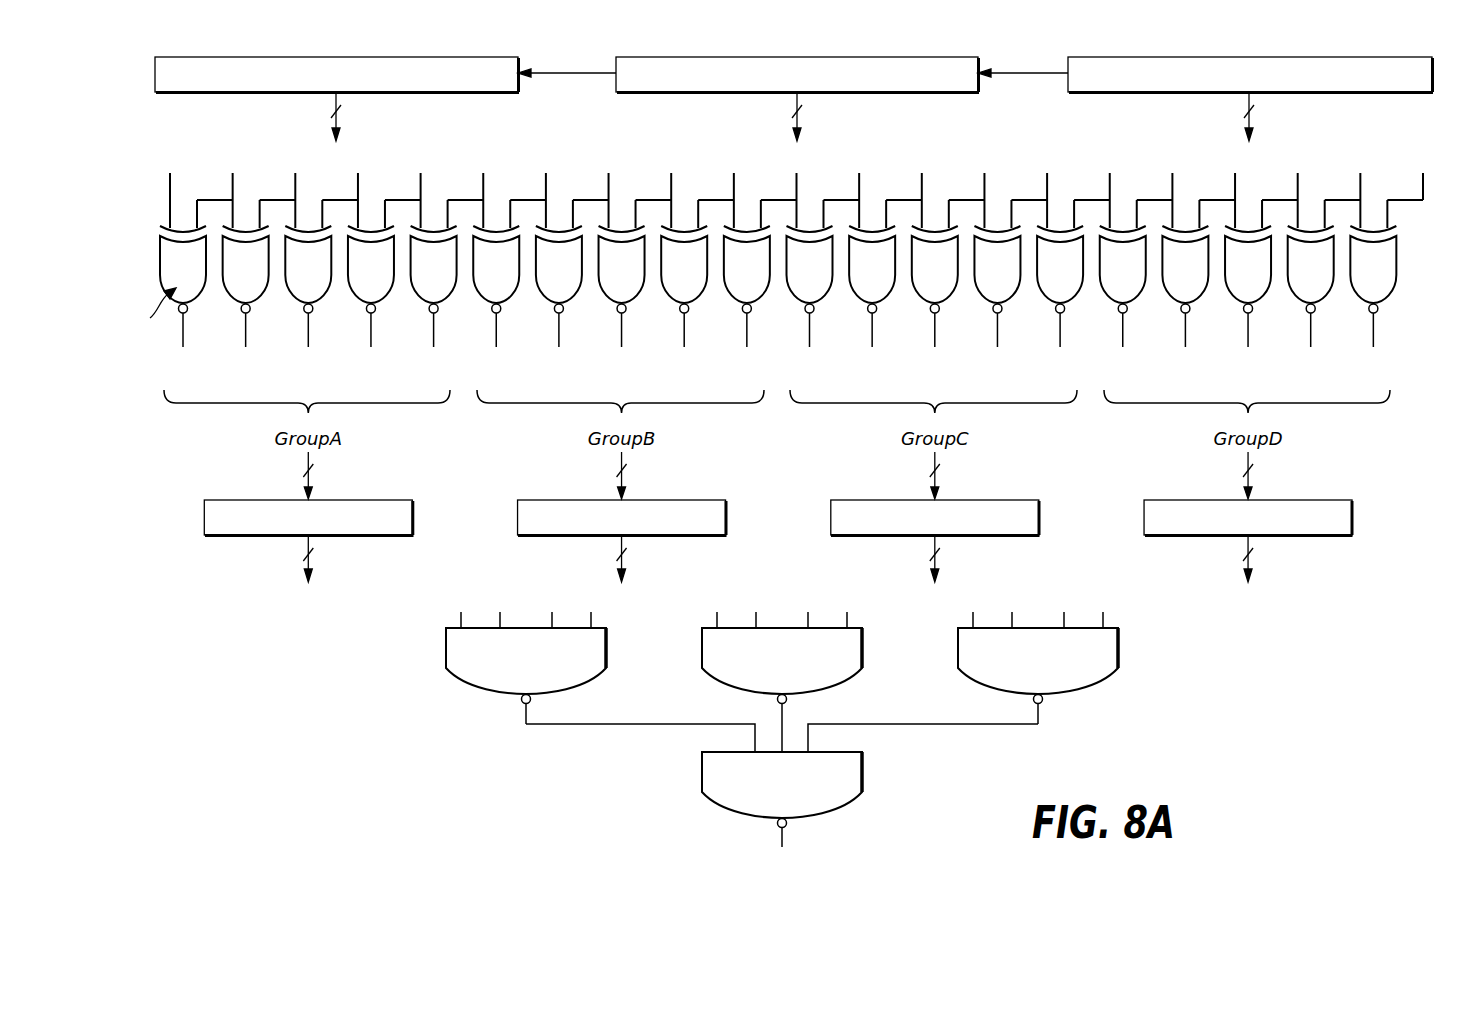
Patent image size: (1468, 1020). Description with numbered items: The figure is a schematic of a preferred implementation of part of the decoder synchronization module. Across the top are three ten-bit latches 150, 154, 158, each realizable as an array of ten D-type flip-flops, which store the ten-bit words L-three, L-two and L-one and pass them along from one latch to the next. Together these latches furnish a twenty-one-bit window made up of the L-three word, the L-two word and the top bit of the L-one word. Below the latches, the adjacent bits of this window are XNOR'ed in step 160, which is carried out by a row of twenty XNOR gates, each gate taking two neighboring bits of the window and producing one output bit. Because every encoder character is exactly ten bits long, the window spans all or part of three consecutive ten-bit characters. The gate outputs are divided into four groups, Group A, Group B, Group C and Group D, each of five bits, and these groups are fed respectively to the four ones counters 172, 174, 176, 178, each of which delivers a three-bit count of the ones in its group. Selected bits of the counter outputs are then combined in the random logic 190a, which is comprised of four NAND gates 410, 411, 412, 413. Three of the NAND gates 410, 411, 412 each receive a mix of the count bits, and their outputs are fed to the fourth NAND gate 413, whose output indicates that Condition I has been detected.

The 10-bit latch 150 is at (1395, 92).
The 10-bit latch 154 is at (941, 92).
The 10-bit latch 158 is at (482, 92).
The XNOR step 160 is at (1412, 254).
The "1" counter 172 is at (412, 515).
The "1" counter 174 is at (725, 515).
The "1" counter 176 is at (1038, 515).
The "1" counter 178 is at (1352, 515).
The random logic 190a is at (831, 729).
The NAND gate 410 is at (606, 650).
The NAND gate 411 is at (862, 650).
The NAND gate 412 is at (1118, 650).
The NAND gate 413 is at (862, 775).